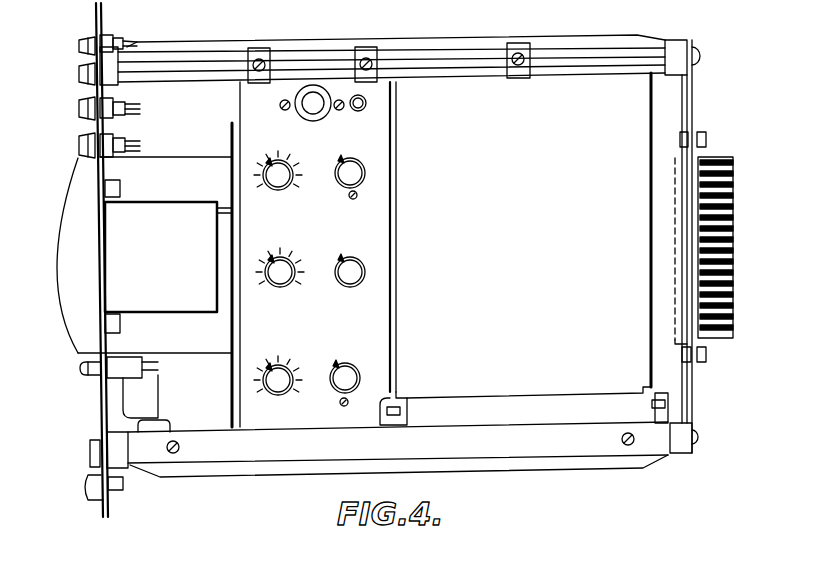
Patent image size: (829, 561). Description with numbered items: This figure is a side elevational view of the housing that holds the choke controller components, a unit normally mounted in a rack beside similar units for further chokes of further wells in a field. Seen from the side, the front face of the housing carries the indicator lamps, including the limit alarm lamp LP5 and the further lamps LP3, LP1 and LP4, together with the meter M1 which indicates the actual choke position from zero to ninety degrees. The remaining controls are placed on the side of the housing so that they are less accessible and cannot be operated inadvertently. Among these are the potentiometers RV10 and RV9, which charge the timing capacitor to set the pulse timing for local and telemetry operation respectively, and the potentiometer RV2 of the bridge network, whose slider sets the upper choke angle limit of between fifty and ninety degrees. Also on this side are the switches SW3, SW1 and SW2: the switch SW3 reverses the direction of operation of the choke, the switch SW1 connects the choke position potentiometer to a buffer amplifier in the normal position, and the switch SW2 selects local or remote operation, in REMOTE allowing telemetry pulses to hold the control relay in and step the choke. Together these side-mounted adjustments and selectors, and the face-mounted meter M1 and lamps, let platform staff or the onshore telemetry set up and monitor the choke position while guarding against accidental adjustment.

The limit alarm lamp LP5 is at (79, 45).
The indicator lamp LP3 is at (79, 72).
The indicator lamp LP1 is at (79, 108).
The indicator lamp LP4 is at (79, 143).
The meter M1 is at (80, 258).
The resistor RV10 is at (272, 176).
The resistor RV9 is at (272, 273).
The potentiometer RV2 is at (270, 381).
The switch SW3 is at (360, 174).
The switch SW1 is at (360, 273).
The switch SW2 is at (357, 380).